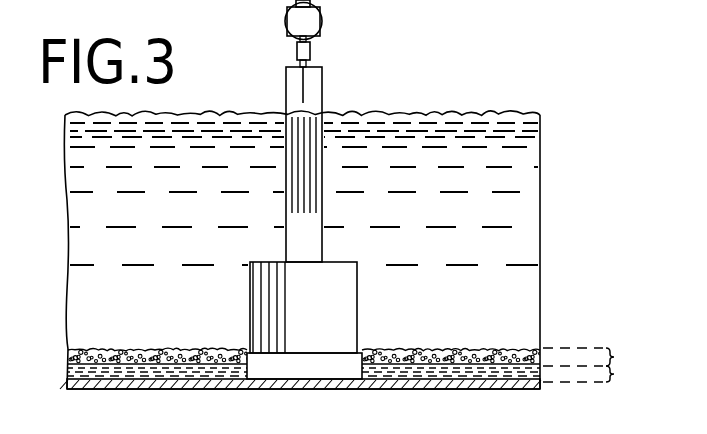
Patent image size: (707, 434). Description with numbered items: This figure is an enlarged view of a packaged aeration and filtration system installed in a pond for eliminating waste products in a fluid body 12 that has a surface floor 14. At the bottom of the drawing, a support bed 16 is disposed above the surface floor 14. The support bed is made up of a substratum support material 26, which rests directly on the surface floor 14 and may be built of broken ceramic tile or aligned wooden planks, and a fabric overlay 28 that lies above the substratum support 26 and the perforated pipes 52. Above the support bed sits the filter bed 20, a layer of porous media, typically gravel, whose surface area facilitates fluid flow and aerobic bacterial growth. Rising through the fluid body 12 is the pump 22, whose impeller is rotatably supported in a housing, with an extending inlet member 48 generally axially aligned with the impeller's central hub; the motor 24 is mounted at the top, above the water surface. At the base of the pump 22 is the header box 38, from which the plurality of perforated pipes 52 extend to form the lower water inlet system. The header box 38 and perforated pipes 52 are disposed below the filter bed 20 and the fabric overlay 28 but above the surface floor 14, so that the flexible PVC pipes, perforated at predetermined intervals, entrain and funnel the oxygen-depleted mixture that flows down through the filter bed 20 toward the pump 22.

The fluid body 12 is at (438, 157).
The surface floor 14 is at (107, 388).
The support bed 16 is at (614, 374).
The filter bed 20 is at (614, 357).
The pump 22 is at (318, 312).
The motor 24 is at (298, 25).
The substratum support material 26 is at (413, 386).
The fabric overlay 28 is at (483, 370).
The header box 38 is at (325, 370).
The extending inlet member 48 is at (305, 128).
The perforated pipes 52 is at (160, 375).